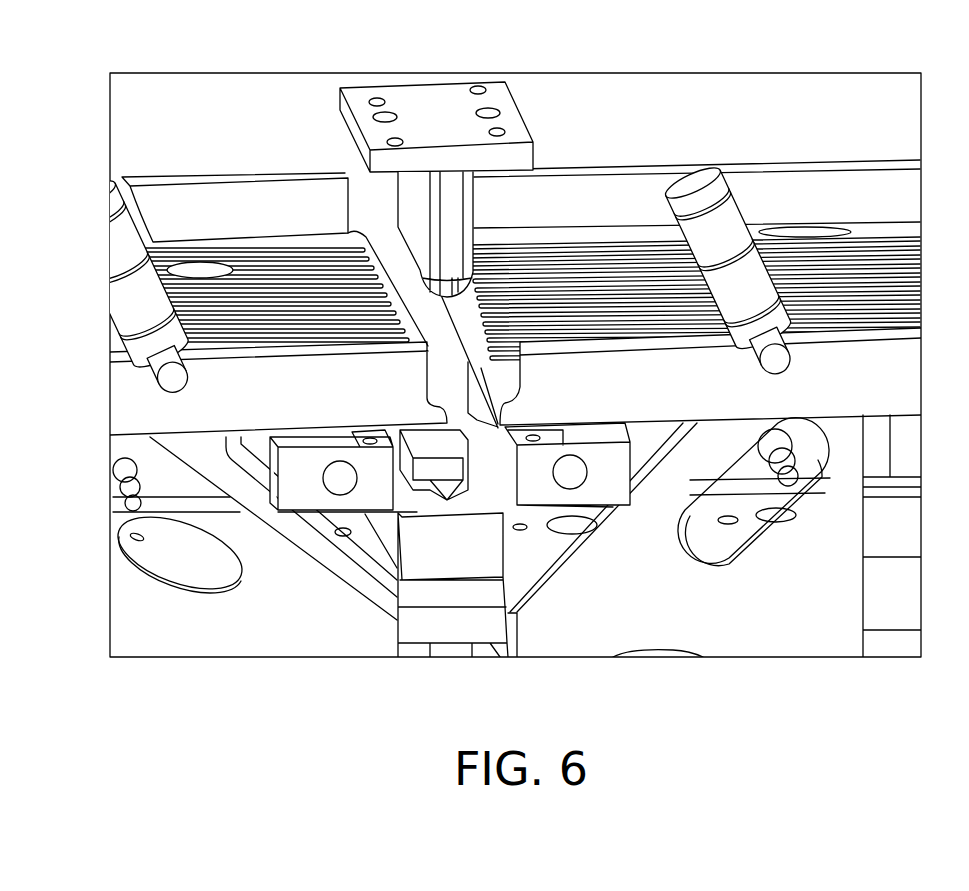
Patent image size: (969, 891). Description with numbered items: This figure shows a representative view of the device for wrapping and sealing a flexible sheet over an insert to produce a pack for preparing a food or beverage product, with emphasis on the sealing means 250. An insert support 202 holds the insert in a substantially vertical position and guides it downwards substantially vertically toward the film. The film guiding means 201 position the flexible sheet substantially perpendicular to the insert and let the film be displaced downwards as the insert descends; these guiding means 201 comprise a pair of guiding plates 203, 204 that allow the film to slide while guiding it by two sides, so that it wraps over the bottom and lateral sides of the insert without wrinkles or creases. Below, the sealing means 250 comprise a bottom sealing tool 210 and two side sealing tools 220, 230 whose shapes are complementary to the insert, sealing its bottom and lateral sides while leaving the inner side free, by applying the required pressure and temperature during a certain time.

The film guiding means 201 is at (110, 363).
The insert support 202 is at (434, 112).
The guiding plate 203 is at (190, 215).
The guiding plate 204 is at (848, 247).
The bottom sealing tool 210 is at (447, 560).
The side sealing tool 220 is at (302, 483).
The side sealing tool 230 is at (610, 477).
The sealing means 250 is at (255, 483).